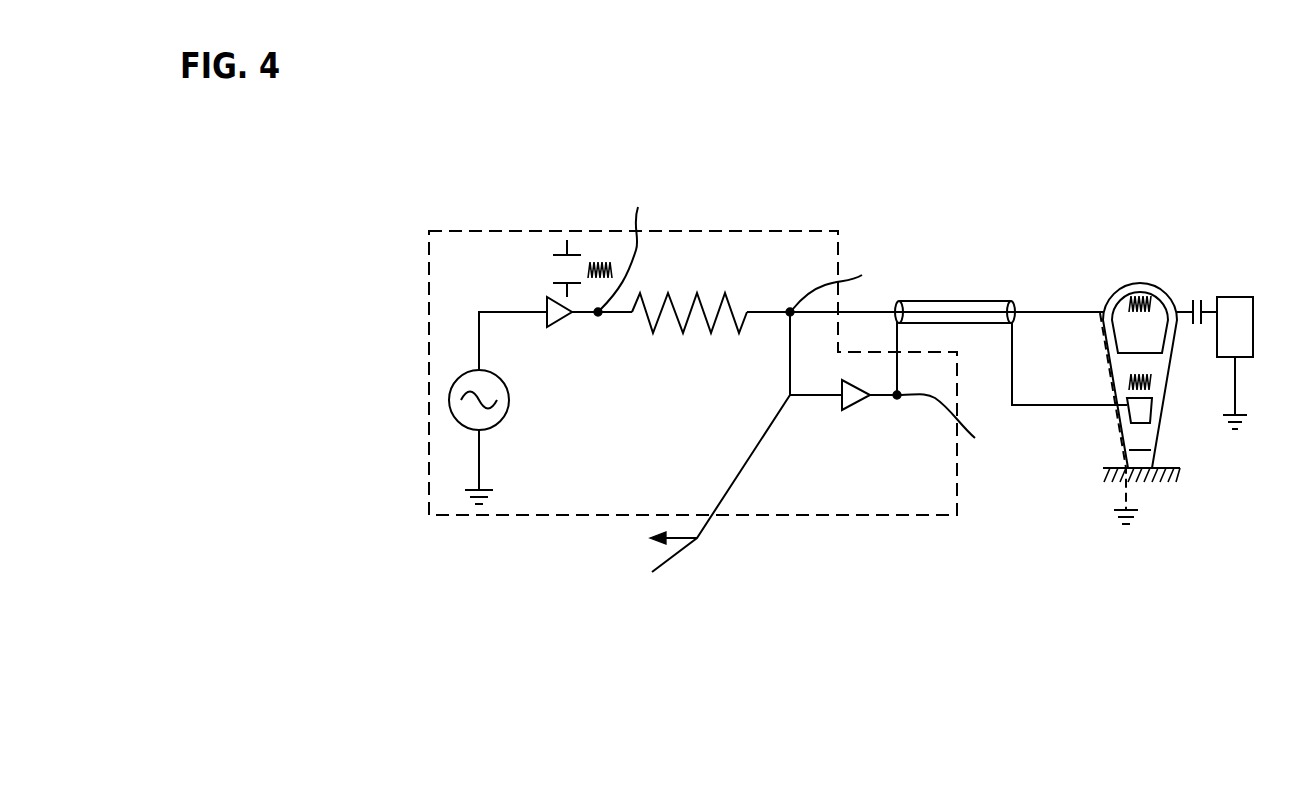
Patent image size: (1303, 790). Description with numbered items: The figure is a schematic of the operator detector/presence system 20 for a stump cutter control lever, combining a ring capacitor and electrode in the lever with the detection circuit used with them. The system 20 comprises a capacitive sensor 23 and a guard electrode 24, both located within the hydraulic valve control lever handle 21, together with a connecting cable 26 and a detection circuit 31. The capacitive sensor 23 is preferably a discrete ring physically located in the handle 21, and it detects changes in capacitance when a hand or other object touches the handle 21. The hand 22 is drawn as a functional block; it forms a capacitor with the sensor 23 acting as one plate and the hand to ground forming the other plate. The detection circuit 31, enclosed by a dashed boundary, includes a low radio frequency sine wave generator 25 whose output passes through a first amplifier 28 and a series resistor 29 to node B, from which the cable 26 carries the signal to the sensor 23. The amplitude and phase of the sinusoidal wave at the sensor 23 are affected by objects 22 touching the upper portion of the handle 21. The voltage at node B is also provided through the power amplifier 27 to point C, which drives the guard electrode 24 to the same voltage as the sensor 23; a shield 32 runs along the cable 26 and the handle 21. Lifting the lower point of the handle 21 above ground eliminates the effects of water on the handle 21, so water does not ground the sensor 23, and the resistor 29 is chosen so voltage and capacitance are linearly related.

The operator detector/presence system 20 is at (1155, 455).
The handle 21 is at (1120, 283).
The hand 22 is at (1227, 296).
The capacitive sensor 23 is at (1112, 330).
The guard electrode 24 is at (1143, 425).
The sine wave generator 25 is at (500, 421).
The connecting cable 26 is at (947, 298).
The power amplifier 27 is at (852, 398).
The amplifier 28 is at (547, 300).
The series resistor 29 is at (683, 323).
The detection circuit 31 is at (683, 245).
The shield line 32 is at (1120, 418).